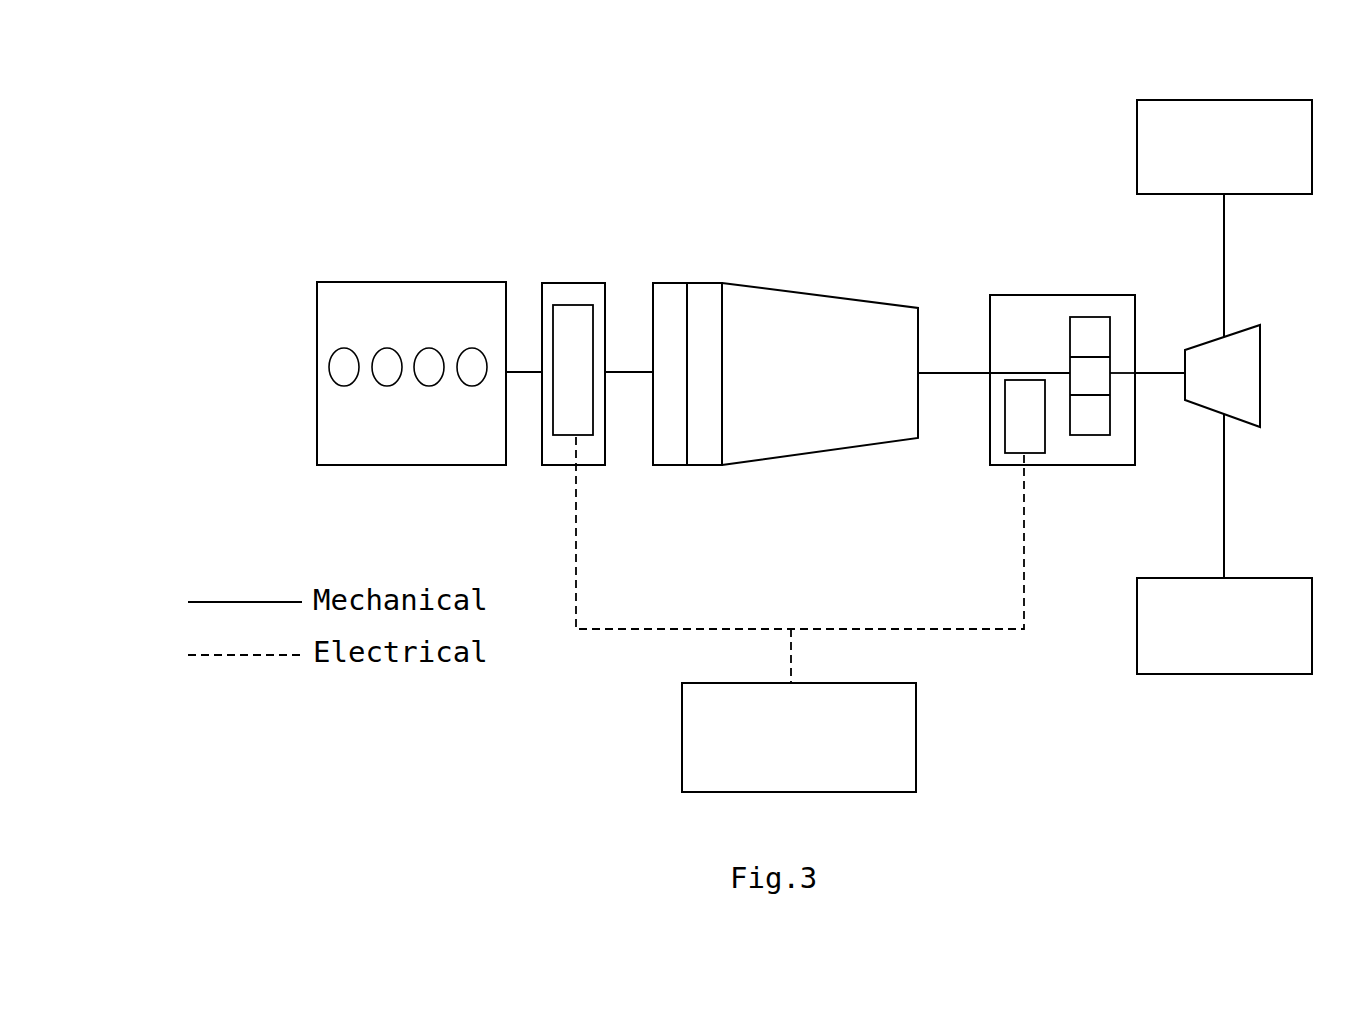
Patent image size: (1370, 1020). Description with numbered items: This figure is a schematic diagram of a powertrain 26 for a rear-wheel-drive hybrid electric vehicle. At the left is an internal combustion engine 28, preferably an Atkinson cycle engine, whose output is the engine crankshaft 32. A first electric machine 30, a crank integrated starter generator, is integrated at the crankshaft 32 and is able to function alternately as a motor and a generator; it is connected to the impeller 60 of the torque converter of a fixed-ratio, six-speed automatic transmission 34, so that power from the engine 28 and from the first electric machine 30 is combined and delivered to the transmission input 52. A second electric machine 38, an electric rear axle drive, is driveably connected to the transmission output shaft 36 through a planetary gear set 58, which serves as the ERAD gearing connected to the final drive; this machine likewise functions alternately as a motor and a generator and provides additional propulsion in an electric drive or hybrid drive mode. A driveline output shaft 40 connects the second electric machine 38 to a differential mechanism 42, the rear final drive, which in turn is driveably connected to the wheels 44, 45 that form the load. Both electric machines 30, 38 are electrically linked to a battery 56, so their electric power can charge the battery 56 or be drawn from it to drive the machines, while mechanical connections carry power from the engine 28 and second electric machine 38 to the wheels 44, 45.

The powertrain 26 is at (802, 207).
The internal combustion engine 28 is at (352, 465).
The first electric machine 30 is at (567, 465).
The engine crankshaft 32 is at (517, 372).
The fixed-ratio automatic transmission 34 is at (875, 445).
The transmission output shaft 36 is at (967, 377).
The second electric machine 38 is at (990, 295).
The driveline output shaft 40 is at (1163, 377).
The differential mechanism 42 is at (1263, 377).
The wheel 44 is at (1215, 100).
The wheel 45 is at (1137, 648).
The transmission input 52 is at (632, 372).
The battery 56 is at (682, 768).
The planetary gear set 58 is at (1088, 435).
The impeller 60 is at (668, 283).